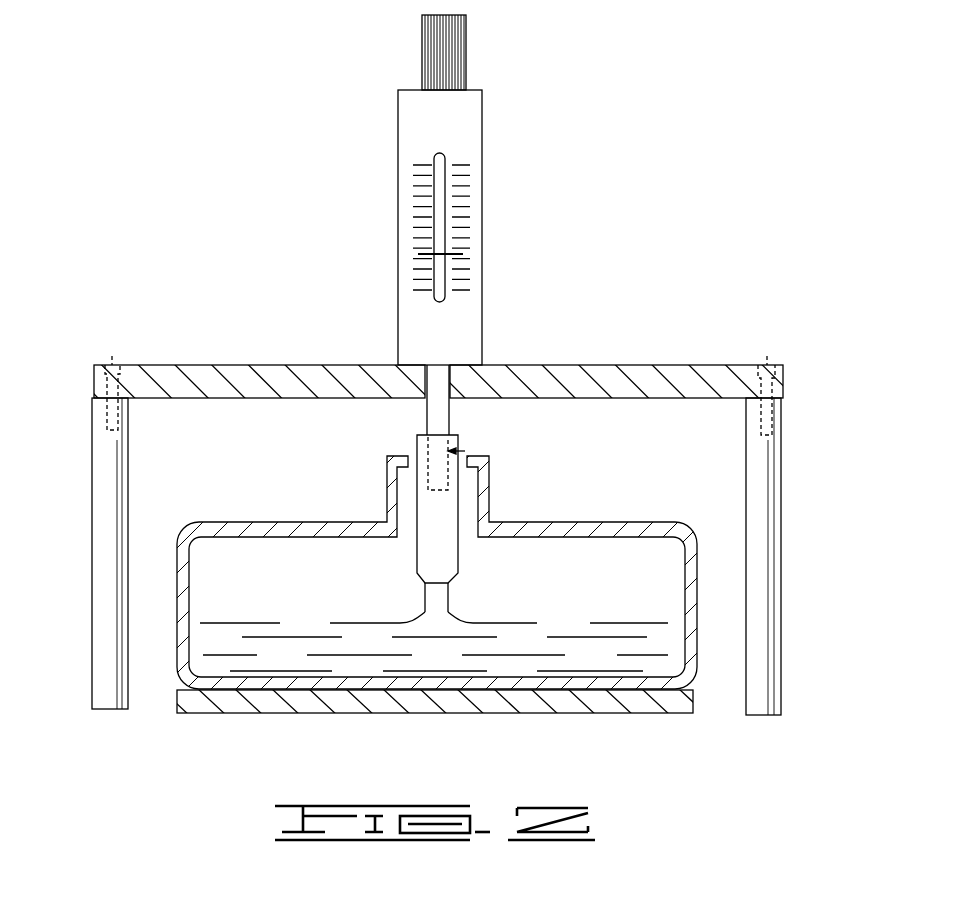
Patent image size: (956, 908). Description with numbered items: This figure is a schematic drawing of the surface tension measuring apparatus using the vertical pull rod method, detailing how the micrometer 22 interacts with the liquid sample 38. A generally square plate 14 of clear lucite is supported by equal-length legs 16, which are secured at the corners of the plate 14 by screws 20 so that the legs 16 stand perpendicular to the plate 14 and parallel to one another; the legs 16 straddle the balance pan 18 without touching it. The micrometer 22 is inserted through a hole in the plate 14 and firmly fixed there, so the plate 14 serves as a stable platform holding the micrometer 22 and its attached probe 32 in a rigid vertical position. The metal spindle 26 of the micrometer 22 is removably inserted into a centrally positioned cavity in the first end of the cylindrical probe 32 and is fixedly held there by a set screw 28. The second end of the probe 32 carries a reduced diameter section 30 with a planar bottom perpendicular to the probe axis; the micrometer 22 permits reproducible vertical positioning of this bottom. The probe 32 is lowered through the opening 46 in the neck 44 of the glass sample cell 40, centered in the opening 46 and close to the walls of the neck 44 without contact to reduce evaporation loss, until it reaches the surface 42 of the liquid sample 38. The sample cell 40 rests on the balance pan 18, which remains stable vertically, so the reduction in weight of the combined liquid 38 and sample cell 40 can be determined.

The plate 14 is at (635, 380).
The legs 16 is at (101, 527).
The balance pan 18 is at (232, 705).
The screws 20 is at (112, 356).
The micrometer 22 is at (491, 121).
The metal spindle 26 is at (437, 392).
The set screw 28 is at (475, 450).
The reduced diameter section 30 is at (431, 605).
The cylindrical probe 32 is at (452, 520).
The liquid sample 38 is at (670, 650).
The sample cell 40 is at (630, 528).
The surface 42 is at (528, 622).
The neck 44 is at (386, 483).
The opening 46 is at (412, 458).